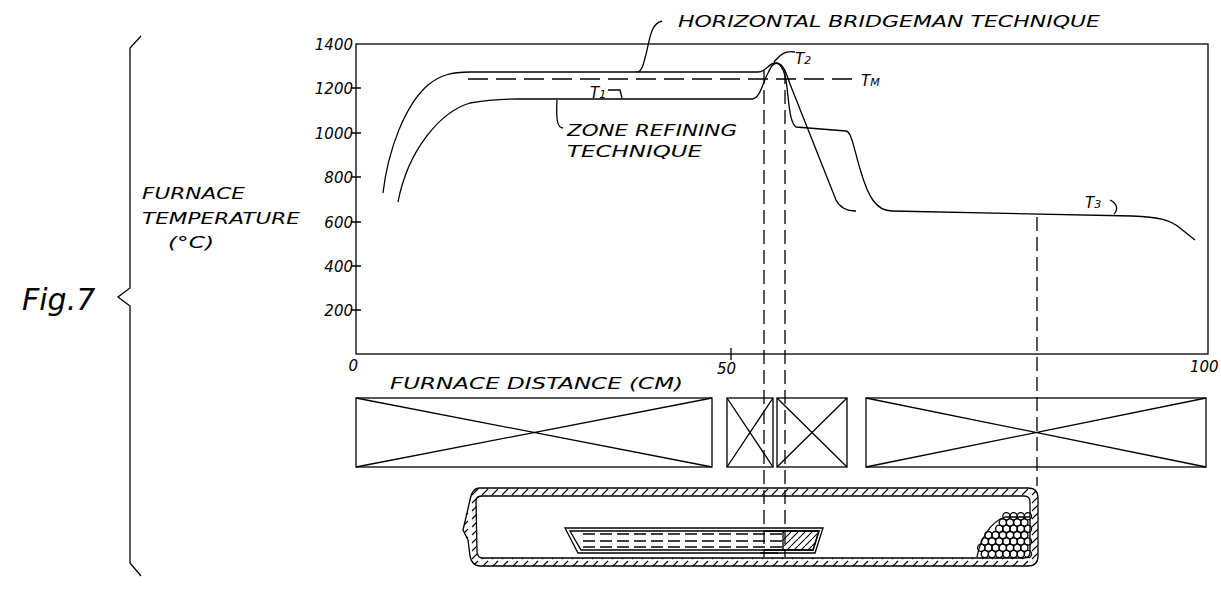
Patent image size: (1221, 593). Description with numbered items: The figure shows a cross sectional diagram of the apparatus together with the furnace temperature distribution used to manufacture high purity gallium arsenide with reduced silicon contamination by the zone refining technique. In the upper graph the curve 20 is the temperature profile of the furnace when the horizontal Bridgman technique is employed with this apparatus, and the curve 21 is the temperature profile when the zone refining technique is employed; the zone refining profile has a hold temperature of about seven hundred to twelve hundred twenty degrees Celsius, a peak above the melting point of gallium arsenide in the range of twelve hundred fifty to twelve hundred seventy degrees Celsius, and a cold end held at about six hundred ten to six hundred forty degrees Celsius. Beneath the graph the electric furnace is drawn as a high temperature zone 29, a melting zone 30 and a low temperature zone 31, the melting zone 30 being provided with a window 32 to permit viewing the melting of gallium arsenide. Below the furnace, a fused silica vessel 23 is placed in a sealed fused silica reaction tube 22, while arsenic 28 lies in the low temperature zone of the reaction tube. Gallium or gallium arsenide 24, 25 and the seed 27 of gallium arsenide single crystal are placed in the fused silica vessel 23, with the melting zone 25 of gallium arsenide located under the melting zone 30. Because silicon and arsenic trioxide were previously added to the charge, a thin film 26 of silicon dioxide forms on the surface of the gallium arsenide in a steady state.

The curve 20 is at (524, 72).
The curve 21 is at (528, 100).
The sealed fused silica reaction tube 22 is at (468, 546).
The fused silica vessel 23 is at (565, 536).
The gallium or gallium arsenide 24 is at (674, 510).
The melting zone of gallium arsenide 25 is at (768, 557).
The thin film of silicon dioxide 26 is at (775, 531).
The seed 27 is at (808, 545).
The arsenic 28 is at (1036, 552).
The high temperature zone 29 is at (365, 426).
The melting zone 30 is at (741, 403).
The low temperature zone 31 is at (1084, 406).
The window 32 is at (778, 426).